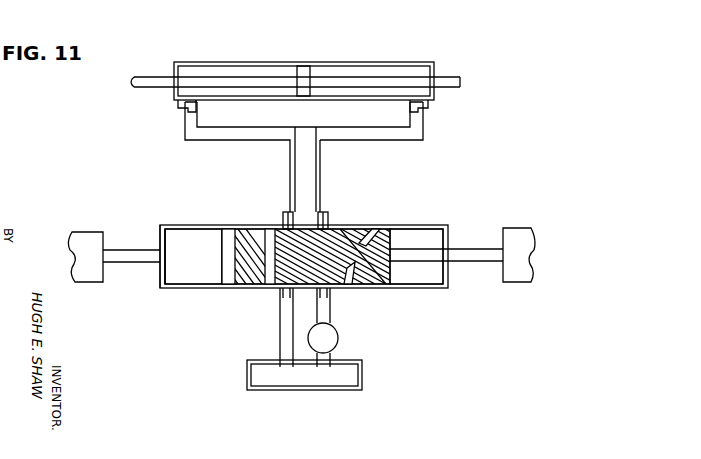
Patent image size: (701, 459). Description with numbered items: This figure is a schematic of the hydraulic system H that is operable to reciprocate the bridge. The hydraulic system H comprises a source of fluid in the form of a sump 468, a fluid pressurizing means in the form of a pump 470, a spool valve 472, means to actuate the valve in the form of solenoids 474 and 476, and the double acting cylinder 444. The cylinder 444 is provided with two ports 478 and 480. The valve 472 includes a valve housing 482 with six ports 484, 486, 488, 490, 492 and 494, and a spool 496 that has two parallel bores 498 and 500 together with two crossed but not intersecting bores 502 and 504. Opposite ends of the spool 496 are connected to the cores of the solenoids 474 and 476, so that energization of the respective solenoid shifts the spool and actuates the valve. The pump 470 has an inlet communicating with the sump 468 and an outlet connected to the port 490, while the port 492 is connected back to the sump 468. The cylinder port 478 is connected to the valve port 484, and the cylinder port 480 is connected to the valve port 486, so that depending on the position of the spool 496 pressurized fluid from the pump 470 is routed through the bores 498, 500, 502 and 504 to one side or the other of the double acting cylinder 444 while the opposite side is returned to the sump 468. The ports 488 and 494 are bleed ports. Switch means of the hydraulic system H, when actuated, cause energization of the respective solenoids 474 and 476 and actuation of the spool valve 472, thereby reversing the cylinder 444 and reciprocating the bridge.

The double acting cylinder 444 is at (404, 62).
The sump 468 is at (258, 366).
The pump 470 is at (338, 340).
The spool valve 472 is at (195, 219).
The solenoid 474 is at (83, 234).
The solenoid 476 is at (520, 230).
The port 478 is at (180, 100).
The port 480 is at (426, 100).
The valve housing 482 is at (160, 228).
The port 484 is at (286, 212).
The port 486 is at (325, 212).
The bleed port 488 is at (437, 288).
The port 490 is at (330, 298).
The port 492 is at (283, 298).
The bleed port 494 is at (168, 288).
The spool 496 is at (296, 274).
The parallel bore 498 is at (229, 232).
The parallel bore 500 is at (270, 232).
The crossed bore 502 is at (350, 284).
The crossed bore 504 is at (345, 228).
The hydraulic system H is at (440, 194).